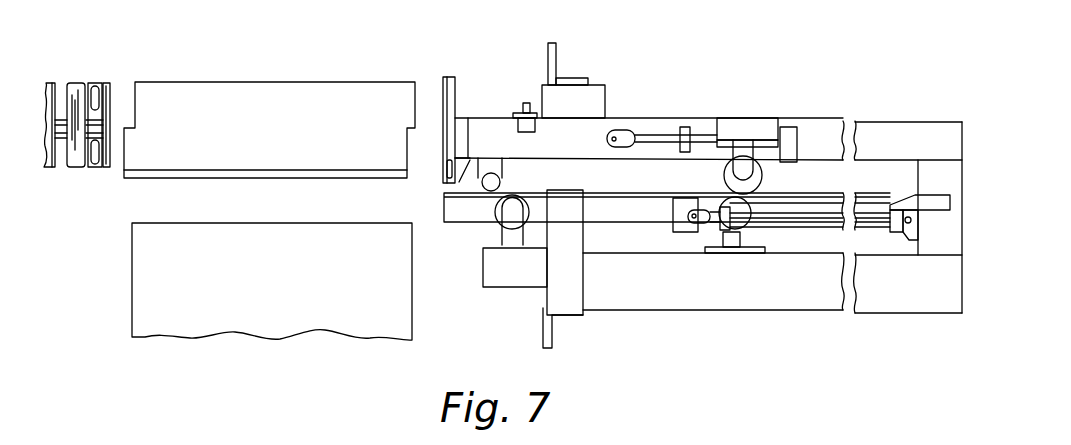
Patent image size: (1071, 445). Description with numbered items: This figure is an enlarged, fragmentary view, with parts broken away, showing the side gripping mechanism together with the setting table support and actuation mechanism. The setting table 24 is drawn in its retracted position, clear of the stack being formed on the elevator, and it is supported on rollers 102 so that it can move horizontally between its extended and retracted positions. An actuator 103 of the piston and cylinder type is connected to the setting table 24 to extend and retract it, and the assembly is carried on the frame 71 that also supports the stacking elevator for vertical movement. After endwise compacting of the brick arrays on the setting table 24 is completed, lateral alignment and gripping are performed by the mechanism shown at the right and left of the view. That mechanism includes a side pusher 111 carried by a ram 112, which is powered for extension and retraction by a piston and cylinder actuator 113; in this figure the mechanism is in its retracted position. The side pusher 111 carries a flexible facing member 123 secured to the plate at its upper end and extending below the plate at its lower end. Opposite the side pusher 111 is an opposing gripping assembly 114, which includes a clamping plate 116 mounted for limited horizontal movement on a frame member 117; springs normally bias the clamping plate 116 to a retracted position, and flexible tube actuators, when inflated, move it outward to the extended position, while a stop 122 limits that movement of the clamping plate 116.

The setting table 24 is at (250, 178).
The frame 71 is at (557, 316).
The rollers 102 is at (503, 183).
The actuator 103 is at (822, 228).
The side pusher 111 is at (457, 113).
The ram 112 is at (574, 153).
The piston and cylinder actuator 113 is at (700, 128).
The opposing gripping assembly 114 is at (84, 74).
The clamping plate 116 is at (112, 98).
The frame member 117 is at (80, 169).
The stop 122 is at (53, 83).
The flexible facing member 123 is at (443, 97).